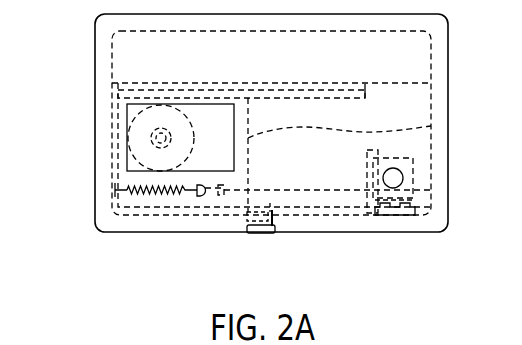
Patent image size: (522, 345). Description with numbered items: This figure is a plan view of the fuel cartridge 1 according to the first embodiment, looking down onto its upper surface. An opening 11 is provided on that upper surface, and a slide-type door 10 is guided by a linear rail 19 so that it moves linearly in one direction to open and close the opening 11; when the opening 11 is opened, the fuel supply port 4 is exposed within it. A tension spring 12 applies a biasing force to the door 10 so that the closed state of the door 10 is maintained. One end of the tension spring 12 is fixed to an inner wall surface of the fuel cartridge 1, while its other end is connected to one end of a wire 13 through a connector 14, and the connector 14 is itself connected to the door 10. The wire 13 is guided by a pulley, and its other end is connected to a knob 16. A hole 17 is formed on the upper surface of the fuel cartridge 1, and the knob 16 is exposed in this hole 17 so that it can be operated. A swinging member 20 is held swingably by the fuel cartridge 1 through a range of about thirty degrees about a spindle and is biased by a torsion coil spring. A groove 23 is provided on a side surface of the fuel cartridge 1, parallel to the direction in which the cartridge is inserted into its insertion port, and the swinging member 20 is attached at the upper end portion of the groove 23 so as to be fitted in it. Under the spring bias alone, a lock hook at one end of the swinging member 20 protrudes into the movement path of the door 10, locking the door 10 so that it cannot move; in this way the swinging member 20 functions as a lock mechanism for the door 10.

The fuel cartridge 1 is at (93, 55).
The fuel supply port 4 is at (135, 157).
The slide-type door 10 is at (431, 126).
The opening 11 is at (127, 116).
The tension spring 12 is at (150, 193).
The wire 13 is at (296, 190).
The connector 14 is at (205, 198).
The knob 16 is at (393, 188).
The hole 17 is at (403, 182).
The linear rail 19 is at (326, 84).
The swinging member 20 is at (250, 233).
The groove 23 is at (272, 233).